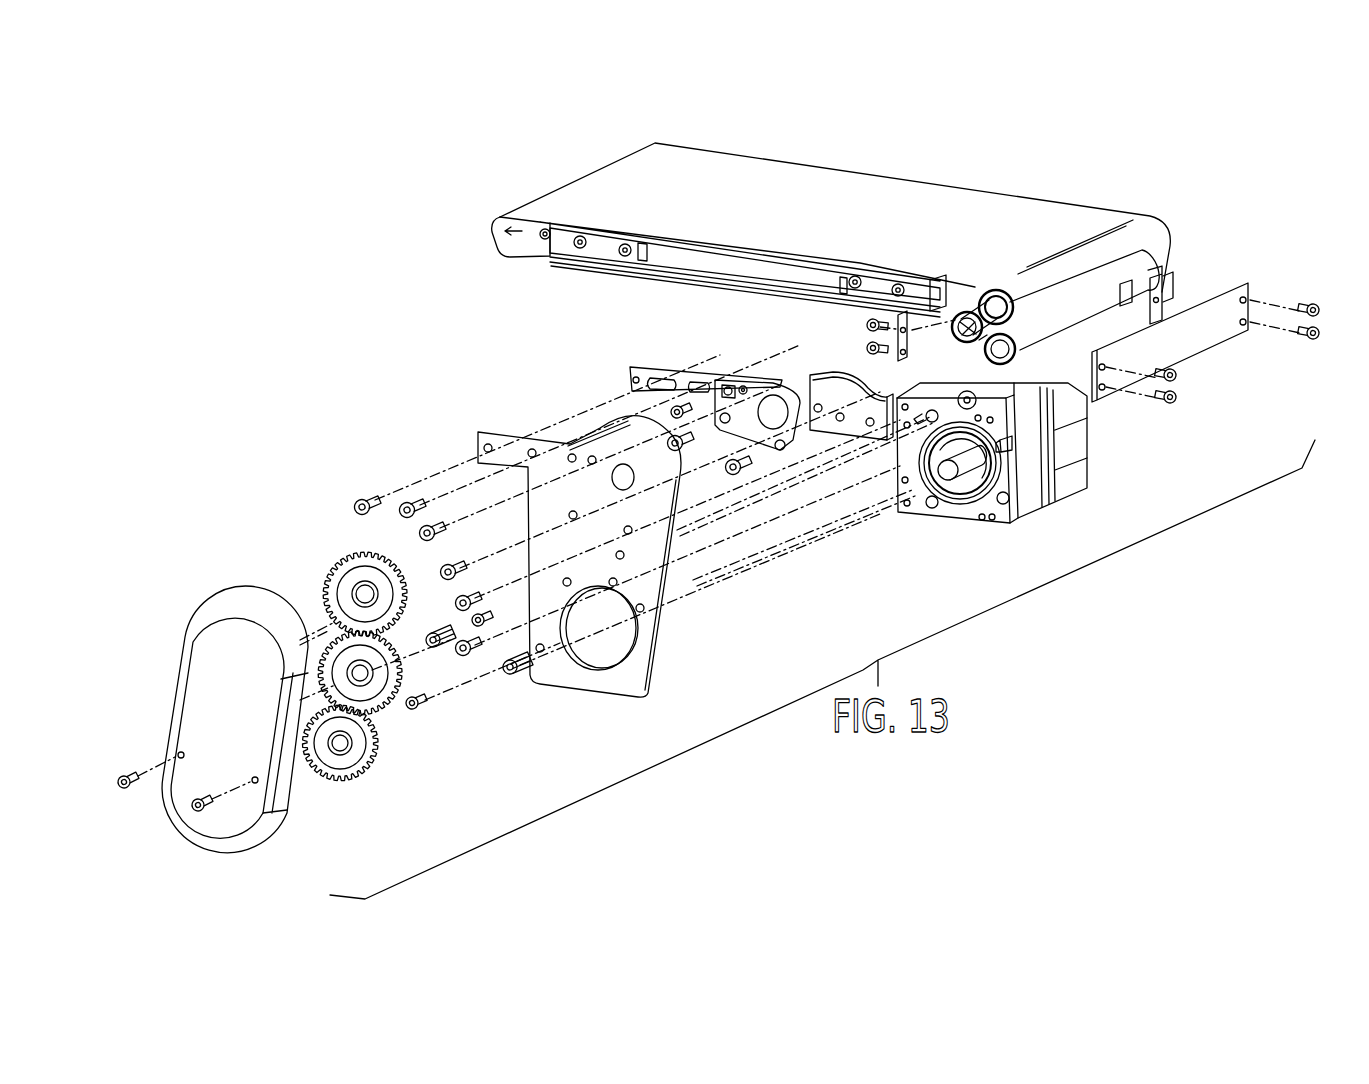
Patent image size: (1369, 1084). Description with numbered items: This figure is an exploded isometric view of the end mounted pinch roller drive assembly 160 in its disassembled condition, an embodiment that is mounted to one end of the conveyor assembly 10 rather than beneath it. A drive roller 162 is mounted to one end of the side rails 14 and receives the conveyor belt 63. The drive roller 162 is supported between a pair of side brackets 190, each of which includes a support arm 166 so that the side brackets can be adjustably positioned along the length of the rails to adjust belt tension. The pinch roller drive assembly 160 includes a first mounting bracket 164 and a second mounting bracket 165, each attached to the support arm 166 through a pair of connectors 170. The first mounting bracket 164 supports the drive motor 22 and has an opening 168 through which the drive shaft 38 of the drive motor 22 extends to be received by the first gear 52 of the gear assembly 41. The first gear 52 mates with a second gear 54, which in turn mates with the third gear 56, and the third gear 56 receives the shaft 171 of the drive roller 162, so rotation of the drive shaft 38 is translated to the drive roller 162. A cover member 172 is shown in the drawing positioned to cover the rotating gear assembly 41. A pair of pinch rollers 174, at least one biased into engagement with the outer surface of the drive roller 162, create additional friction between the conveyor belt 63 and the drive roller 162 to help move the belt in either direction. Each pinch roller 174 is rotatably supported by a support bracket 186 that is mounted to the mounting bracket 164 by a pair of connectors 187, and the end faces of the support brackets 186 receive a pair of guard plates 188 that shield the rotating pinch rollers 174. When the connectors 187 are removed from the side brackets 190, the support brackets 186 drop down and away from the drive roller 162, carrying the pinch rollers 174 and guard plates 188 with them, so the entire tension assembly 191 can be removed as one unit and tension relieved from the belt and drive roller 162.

The conveyor assembly 10 is at (995, 181).
The side rails 14 is at (689, 247).
The drive motor 22 is at (1077, 462).
The drive shaft 38 is at (963, 478).
The gear assembly 41 is at (321, 606).
The first gear 52 is at (360, 763).
The second gear 54 is at (382, 684).
The third gear 56 is at (346, 577).
The conveyor belt 63 is at (874, 183).
The pinch roller drive assembly 160 is at (355, 414).
The drive roller 162 is at (992, 292).
The first mounting bracket 164 is at (597, 432).
The second mounting bracket 165 is at (1166, 282).
The support arm 166 is at (656, 366).
The opening 168 is at (636, 652).
The connectors 170 is at (410, 500).
The shaft 171 is at (1032, 282).
The cover 172 is at (212, 633).
The pinch rollers 174 is at (936, 298).
The support bracket 186 is at (1172, 280).
The connectors 187 is at (733, 477).
The guard plates 188 is at (902, 314).
The side brackets 190 is at (766, 437).
The tension assembly 191 is at (867, 460).